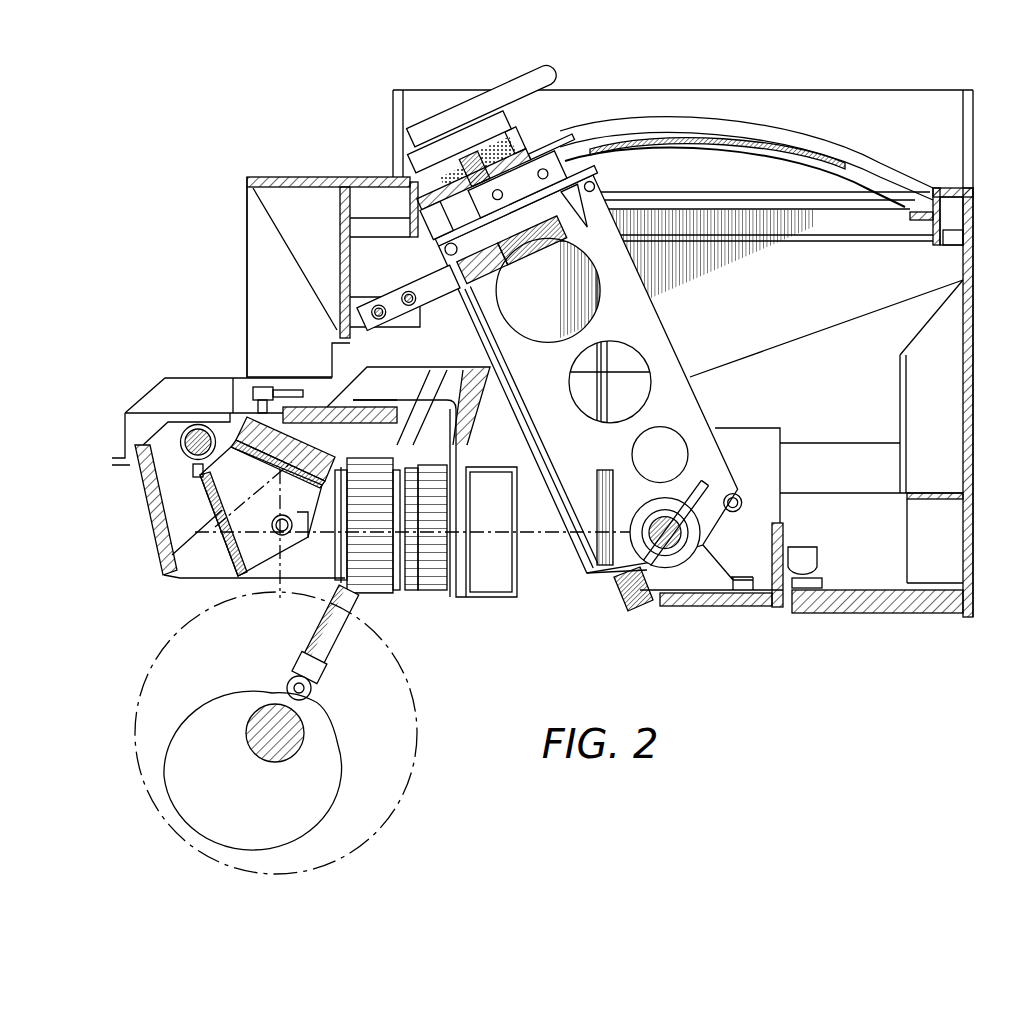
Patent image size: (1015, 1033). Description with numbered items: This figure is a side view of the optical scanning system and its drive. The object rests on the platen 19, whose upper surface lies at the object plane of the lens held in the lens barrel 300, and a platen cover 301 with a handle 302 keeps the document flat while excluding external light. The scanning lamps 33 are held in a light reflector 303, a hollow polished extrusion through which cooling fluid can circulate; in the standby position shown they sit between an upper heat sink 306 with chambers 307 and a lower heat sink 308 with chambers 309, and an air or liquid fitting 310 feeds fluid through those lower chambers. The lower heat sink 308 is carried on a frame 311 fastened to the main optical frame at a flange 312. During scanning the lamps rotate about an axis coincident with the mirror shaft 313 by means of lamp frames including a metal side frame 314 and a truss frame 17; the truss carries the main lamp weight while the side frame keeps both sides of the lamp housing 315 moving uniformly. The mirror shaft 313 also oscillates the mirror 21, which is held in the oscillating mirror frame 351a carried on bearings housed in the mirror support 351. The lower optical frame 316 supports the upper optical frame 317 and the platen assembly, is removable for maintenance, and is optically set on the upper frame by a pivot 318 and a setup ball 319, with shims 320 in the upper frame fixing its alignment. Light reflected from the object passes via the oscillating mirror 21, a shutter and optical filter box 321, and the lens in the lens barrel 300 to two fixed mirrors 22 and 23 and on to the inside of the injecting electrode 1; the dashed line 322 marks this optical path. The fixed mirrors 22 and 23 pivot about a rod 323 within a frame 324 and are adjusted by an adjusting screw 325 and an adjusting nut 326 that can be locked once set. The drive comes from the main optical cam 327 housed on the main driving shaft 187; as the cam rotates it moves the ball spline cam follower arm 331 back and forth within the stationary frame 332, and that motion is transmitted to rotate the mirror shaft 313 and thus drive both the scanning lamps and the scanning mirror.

The injecting electrode 1 is at (418, 752).
The truss frame 17 is at (597, 384).
The platen 19 is at (697, 148).
The oscillating mirror 21 is at (668, 566).
The fixed mirror 22 is at (250, 508).
The fixed mirror 23 is at (268, 458).
The lamps 33 is at (517, 193).
The main driving shaft 187 is at (247, 740).
The lens barrel 300 is at (388, 597).
The platen cover 301 is at (818, 147).
The handle 302 is at (545, 92).
The light reflector 303 is at (578, 175).
The upper heat sink 306 is at (520, 148).
The chambers 307 is at (460, 168).
The lower heat sink 308 is at (490, 280).
The chambers 309 is at (528, 255).
The air or liquid fitting 310 is at (442, 246).
The frame 311 is at (388, 318).
The flange 312 is at (355, 292).
The mirror shaft 313 is at (655, 503).
The metal side frame 314 is at (665, 296).
The lamp housing 315 is at (583, 218).
The lower optical frame 316 is at (720, 606).
The upper optical frame 317 is at (870, 610).
The pivot 318 is at (290, 515).
The setup ball 319 is at (820, 562).
The shims 320 is at (828, 584).
The shutter and optical filter box 321 is at (510, 565).
The optical path 322 is at (333, 530).
The rod 323 is at (205, 432).
The frame 324 is at (191, 468).
The adjusting screw 325 is at (290, 390).
The adjusting nut 326 is at (258, 387).
The main optical cam 327 is at (340, 790).
The ball spline cam follower arm 331 is at (337, 652).
The stationary frame 332 is at (480, 364).
The mirror support 351 is at (718, 572).
The oscillating mirror frame 351a is at (640, 610).